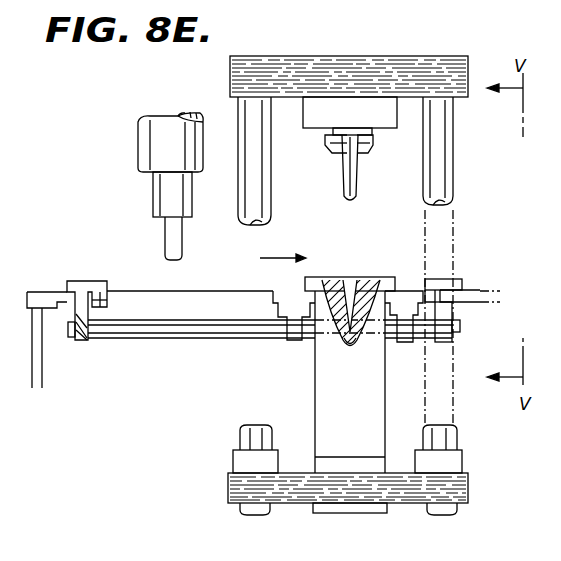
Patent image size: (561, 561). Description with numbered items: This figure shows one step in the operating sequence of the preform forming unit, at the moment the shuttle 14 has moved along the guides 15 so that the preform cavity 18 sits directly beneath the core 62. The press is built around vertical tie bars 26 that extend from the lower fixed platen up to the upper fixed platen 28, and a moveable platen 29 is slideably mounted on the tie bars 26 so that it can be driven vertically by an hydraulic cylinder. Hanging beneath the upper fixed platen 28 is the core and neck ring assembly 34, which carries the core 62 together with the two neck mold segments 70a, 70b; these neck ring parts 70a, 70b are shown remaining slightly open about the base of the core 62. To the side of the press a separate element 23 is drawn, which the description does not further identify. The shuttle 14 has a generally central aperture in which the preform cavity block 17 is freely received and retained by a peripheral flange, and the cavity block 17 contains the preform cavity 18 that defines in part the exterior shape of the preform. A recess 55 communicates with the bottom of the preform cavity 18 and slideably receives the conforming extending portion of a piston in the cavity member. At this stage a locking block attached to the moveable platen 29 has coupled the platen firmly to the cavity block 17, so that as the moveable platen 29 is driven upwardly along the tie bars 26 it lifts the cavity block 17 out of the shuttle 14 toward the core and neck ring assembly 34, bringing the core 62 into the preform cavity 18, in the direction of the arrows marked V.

The upper fixed platen 28 is at (235, 72).
The vertical tie bars 26 is at (453, 176).
The core and neck ring assembly 34 is at (396, 136).
The neck mold segment 70a is at (324, 138).
The neck mold segment 70b is at (369, 143).
The core 62 is at (355, 190).
The tool 23 is at (168, 238).
The shuttle 14 is at (283, 283).
The guides 15 is at (190, 328).
The preform cavity 18 is at (370, 320).
The recess 55 is at (348, 349).
The preform cavity block 17 is at (328, 400).
The moveable platen 29 is at (468, 483).